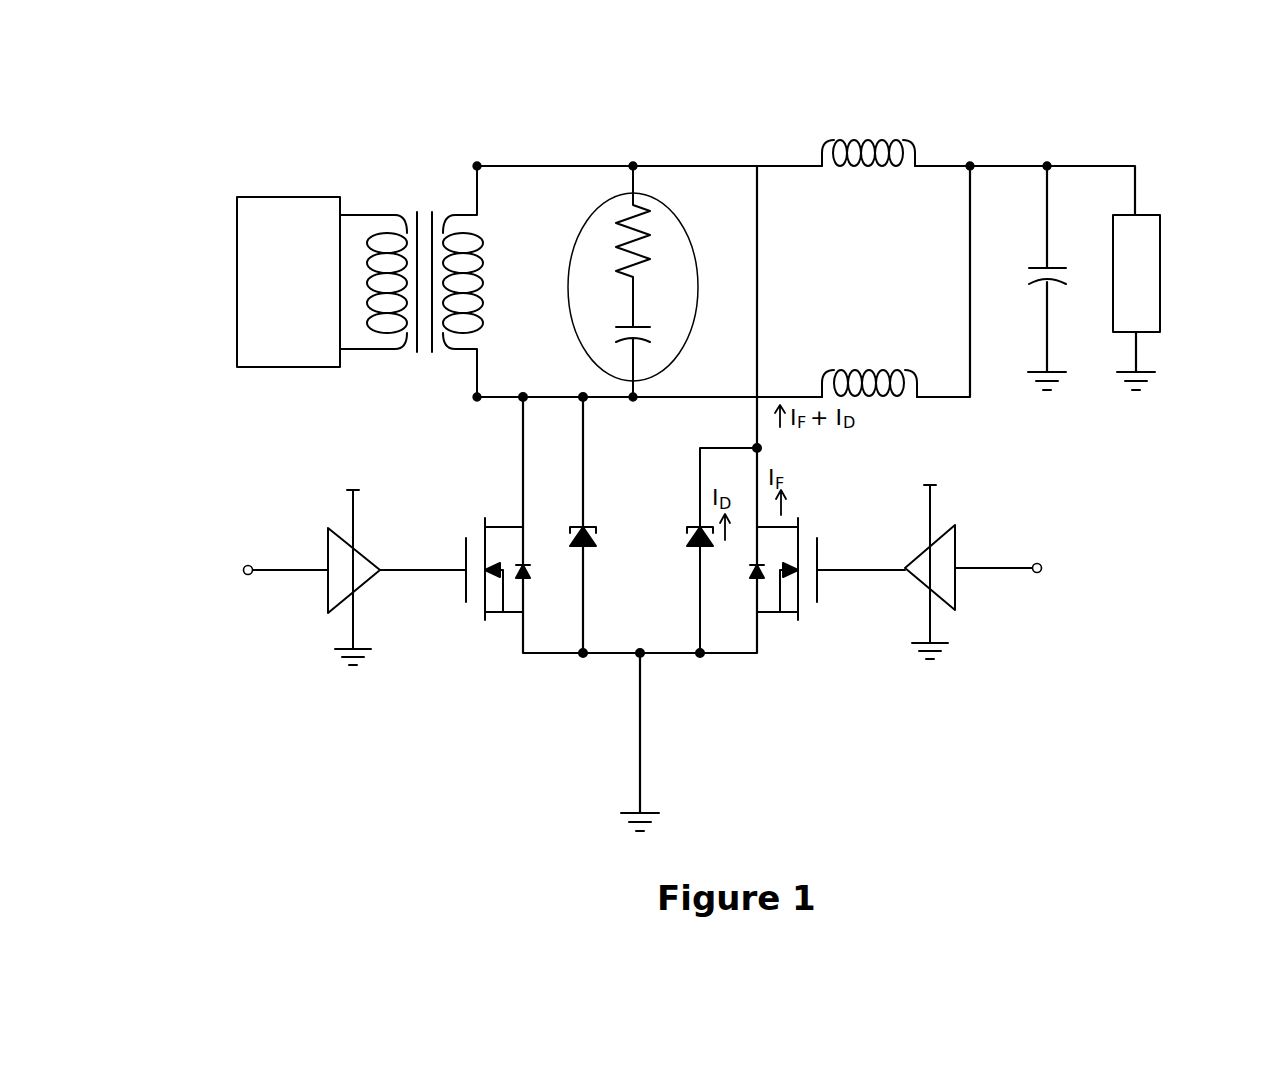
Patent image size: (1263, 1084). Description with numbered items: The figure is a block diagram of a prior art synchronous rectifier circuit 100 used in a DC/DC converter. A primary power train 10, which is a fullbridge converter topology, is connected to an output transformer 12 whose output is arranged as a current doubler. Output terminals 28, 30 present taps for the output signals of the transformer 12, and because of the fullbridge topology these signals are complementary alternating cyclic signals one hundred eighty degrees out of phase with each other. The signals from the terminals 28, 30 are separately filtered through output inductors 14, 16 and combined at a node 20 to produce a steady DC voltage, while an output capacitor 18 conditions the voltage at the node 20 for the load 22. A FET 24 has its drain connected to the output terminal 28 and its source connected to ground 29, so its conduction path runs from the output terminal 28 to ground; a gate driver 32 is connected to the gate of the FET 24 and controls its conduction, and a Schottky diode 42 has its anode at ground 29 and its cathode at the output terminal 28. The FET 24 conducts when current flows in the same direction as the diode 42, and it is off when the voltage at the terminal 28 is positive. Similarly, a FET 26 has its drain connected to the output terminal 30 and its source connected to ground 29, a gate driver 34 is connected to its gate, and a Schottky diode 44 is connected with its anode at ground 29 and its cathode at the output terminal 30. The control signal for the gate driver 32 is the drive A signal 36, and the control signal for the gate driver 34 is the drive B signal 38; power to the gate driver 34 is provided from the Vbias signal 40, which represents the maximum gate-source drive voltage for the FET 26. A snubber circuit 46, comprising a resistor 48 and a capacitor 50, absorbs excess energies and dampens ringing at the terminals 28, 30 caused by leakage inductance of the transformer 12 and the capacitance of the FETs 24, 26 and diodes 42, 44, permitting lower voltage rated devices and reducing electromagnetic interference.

The circuit 100 is at (793, 80).
The primary power train 10 is at (278, 205).
The output transformer 12 is at (418, 186).
The output inductor 14 is at (902, 132).
The output inductor 16 is at (835, 366).
The output capacitor 18 is at (1033, 290).
The node 20 is at (1048, 160).
The load 22 is at (1162, 280).
The FET 24 is at (497, 618).
The FET 26 is at (790, 618).
The output terminal 28 is at (478, 400).
The ground 29 is at (645, 657).
The output terminal 30 is at (475, 154).
The gate driver 32 is at (330, 612).
The gate driver 34 is at (958, 603).
The drive A signal 36 is at (196, 583).
The drive B signal 38 is at (1090, 583).
The Vbias signal 40 is at (322, 471).
The Schottky diode 42 is at (597, 538).
The Schottky diode 44 is at (690, 520).
The snubber circuit 46 is at (633, 257).
The resistor 48 is at (618, 246).
The capacitor 50 is at (617, 357).